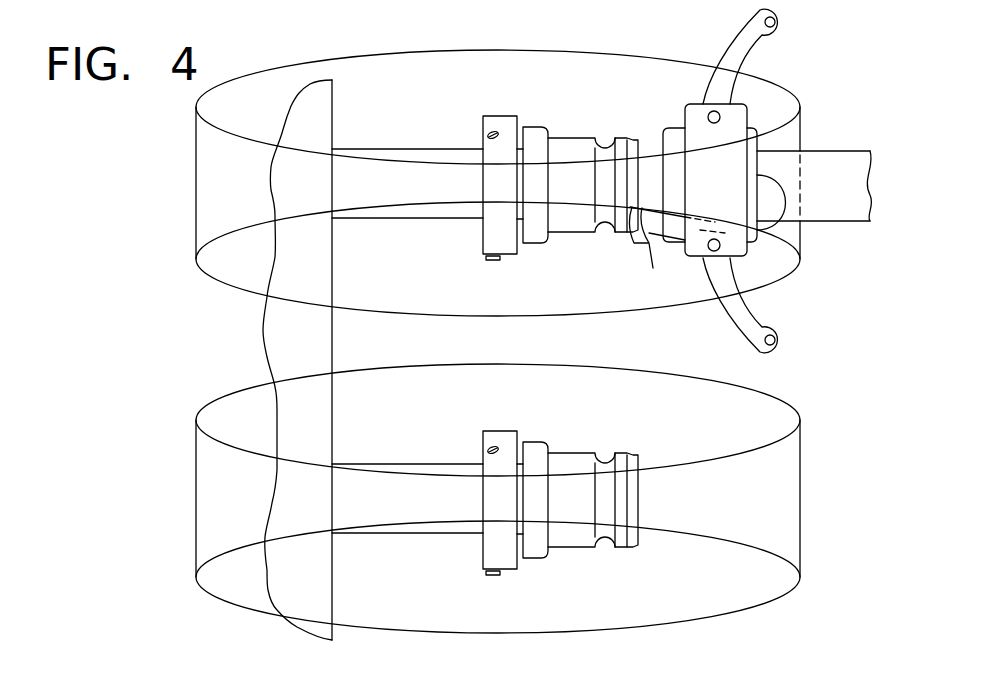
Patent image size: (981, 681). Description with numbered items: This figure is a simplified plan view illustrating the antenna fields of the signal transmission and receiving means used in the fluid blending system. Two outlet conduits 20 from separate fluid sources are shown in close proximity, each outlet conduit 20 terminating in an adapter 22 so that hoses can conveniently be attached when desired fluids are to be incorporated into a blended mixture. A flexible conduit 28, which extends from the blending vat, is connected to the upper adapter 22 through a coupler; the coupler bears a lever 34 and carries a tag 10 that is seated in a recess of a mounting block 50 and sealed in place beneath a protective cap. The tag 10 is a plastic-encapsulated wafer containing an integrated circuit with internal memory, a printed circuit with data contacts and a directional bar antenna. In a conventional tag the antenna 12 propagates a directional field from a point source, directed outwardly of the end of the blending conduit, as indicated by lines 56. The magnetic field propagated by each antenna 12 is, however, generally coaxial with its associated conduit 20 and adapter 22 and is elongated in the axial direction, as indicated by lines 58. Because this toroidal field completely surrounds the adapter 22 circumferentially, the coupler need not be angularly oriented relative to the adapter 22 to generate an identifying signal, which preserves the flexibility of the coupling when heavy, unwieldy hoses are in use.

The tag 10 is at (745, 257).
The antenna 12 is at (482, 128).
The outlet conduit 20 is at (382, 219).
The adapter 22 is at (557, 138).
The flexible conduit 28 is at (846, 150).
The lever 34 is at (753, 42).
The mounting block 50 is at (795, 237).
The lines indicating directional field 56 is at (650, 245).
The lines indicating axially elongated magnetic field 58 is at (290, 63).